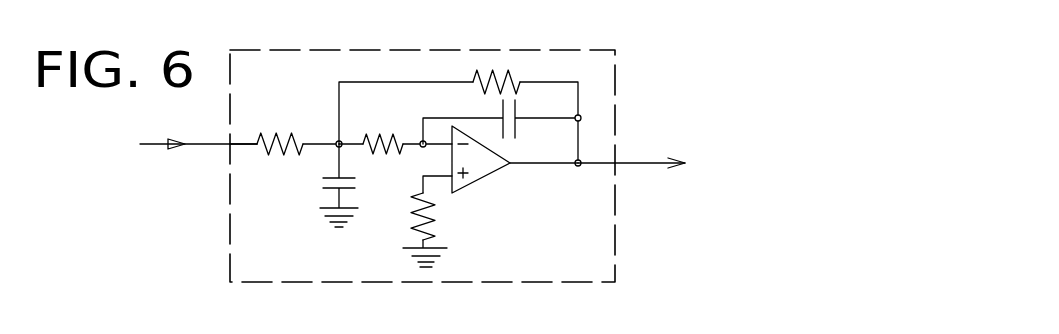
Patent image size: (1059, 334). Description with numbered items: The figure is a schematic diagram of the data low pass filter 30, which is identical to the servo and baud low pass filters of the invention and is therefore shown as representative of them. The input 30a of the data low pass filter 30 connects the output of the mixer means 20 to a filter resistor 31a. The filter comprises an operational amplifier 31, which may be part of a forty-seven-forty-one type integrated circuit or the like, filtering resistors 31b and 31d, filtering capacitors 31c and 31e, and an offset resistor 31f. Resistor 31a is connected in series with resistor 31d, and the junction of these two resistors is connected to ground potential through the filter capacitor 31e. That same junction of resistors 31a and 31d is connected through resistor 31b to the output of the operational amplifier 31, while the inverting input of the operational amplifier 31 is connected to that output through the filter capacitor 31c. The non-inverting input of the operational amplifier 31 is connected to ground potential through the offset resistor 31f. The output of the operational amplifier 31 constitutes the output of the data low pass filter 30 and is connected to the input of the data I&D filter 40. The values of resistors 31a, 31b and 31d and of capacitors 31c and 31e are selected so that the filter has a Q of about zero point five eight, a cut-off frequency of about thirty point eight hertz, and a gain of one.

The mixer means 20 is at (156, 144).
The data low pass filter 30 is at (333, 50).
The input 30a is at (245, 146).
The operational amplifier 31 is at (470, 183).
The filter resistor 31a is at (270, 135).
The filtering resistor 31b is at (492, 78).
The filtering capacitor 31c is at (513, 140).
The filtering resistor 31d is at (366, 140).
The filtering capacitor 31e is at (352, 182).
The offset resistor 31f is at (435, 218).
The data I&D filter 40 is at (716, 165).